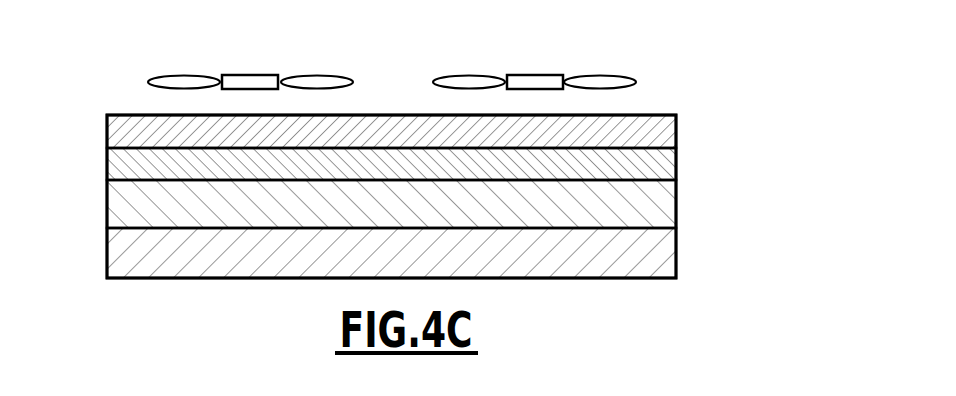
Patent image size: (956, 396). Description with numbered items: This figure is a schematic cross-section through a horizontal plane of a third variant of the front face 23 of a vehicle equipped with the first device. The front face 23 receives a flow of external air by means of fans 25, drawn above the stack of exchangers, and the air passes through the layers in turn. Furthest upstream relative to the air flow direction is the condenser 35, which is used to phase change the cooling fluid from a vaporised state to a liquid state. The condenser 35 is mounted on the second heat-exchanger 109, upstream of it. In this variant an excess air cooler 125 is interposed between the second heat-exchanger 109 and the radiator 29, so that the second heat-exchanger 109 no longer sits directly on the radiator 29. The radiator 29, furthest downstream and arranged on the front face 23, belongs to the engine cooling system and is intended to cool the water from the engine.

The front face 23 is at (763, 128).
The fans 25 is at (249, 80).
The condenser 35 is at (117, 133).
The second heat-exchanger 109 is at (667, 167).
The excess air cooler 125 is at (667, 208).
The radiator 29 is at (667, 257).